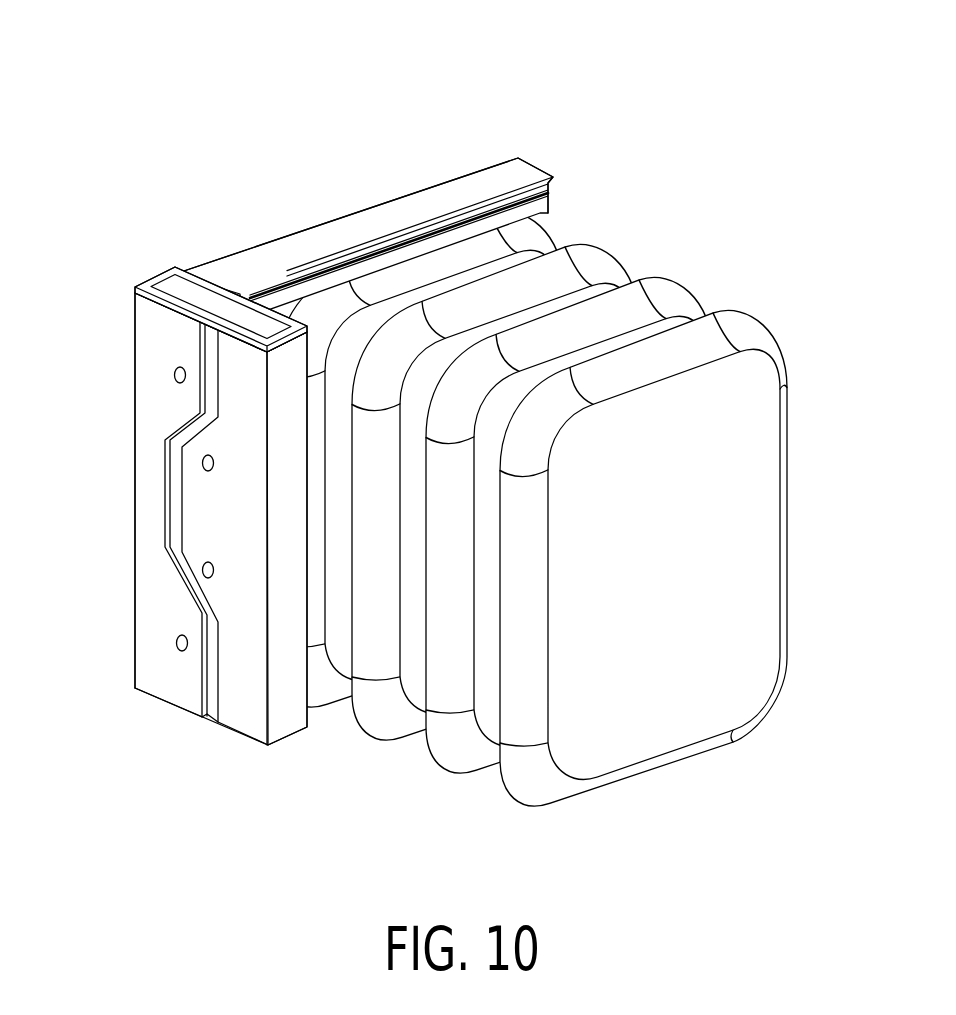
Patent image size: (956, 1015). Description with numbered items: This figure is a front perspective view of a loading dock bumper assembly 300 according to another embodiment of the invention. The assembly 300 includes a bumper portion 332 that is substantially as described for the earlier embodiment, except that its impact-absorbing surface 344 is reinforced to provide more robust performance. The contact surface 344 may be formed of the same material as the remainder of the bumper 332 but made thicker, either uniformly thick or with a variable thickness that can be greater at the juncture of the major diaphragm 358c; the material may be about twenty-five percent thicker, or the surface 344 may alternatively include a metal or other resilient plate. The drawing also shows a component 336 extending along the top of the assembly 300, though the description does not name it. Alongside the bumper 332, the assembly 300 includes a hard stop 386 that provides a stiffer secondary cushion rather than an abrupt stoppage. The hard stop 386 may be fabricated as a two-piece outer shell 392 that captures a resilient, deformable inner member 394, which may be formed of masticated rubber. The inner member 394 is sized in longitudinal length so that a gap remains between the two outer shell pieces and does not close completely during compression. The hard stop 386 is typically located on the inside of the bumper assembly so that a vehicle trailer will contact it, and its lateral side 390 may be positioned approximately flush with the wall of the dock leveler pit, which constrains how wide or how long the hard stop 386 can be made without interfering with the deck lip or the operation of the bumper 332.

The loading dock bumper assembly 300 is at (722, 101).
The bumper portion 332 is at (522, 718).
The rail 336 is at (363, 222).
The impact-absorbing surface 344 is at (733, 563).
The major diaphragm 358c is at (692, 550).
The hard stop 386 is at (155, 548).
The lateral side 390 is at (150, 412).
The two-piece outer shell 392 is at (127, 698).
The inner member 394 is at (180, 272).